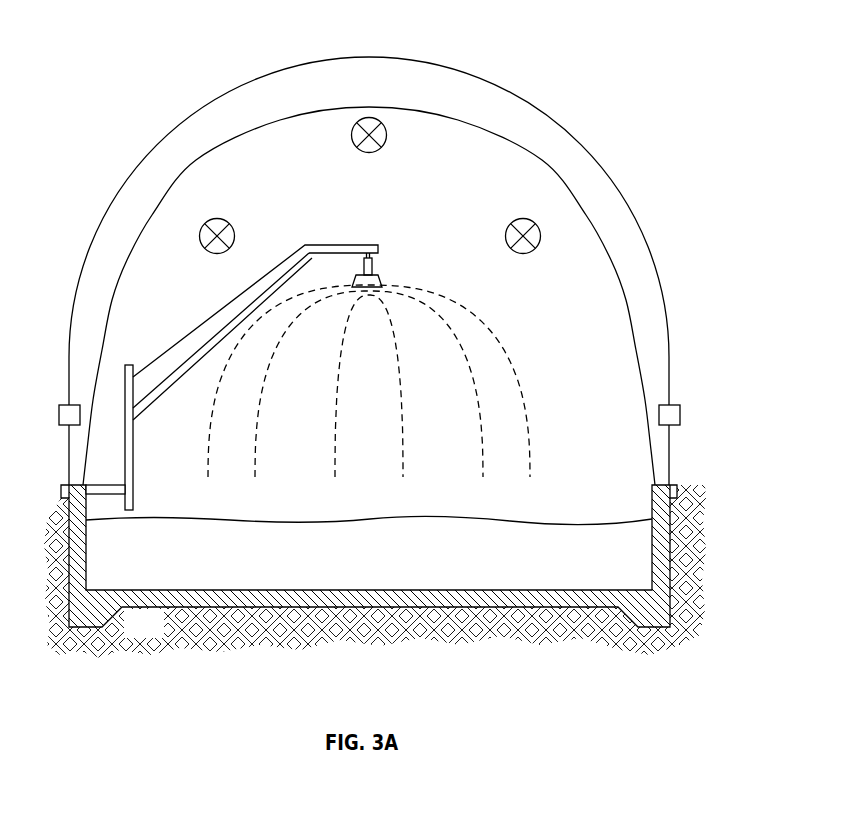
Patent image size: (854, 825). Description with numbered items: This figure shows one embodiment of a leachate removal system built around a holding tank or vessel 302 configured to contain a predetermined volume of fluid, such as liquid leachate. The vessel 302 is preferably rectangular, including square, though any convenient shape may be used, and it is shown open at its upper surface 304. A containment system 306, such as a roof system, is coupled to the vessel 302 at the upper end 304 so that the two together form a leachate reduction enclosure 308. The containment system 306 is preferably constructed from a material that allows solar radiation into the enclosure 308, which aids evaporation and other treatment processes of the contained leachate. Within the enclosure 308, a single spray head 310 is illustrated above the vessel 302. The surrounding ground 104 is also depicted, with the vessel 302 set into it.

The leachate reduction enclosure 308 is at (389, 254).
The containment system 306 is at (645, 270).
The upper surface 304 is at (67, 484).
The spray head 310 is at (378, 276).
The holding tank or vessel 302 is at (333, 600).
The ground 104 is at (161, 634).